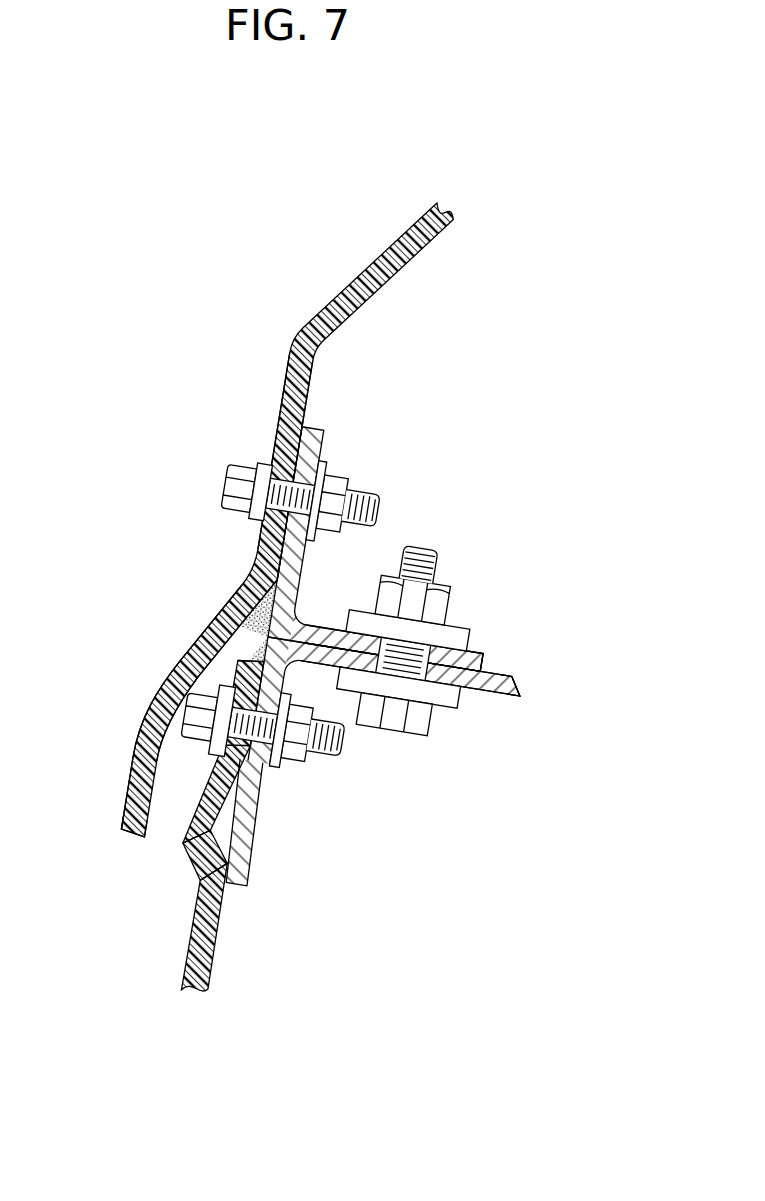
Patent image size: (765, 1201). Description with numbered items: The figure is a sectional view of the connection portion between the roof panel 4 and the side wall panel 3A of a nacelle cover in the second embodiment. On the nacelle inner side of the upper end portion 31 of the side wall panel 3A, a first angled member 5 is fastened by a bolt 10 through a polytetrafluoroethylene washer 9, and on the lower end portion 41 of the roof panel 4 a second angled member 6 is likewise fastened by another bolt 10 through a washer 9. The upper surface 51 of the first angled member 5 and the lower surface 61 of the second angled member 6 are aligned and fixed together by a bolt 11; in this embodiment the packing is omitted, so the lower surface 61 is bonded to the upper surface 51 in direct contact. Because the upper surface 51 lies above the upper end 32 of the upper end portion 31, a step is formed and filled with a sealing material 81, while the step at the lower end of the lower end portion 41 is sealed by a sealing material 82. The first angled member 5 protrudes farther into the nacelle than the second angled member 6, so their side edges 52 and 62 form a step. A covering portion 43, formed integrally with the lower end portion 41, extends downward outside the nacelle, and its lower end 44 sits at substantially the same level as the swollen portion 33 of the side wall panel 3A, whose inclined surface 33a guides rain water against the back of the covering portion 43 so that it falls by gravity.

The side wall panel 3A is at (185, 963).
The roof panel 4 is at (307, 332).
The first angled member 5 is at (243, 863).
The second angled member 6 is at (325, 440).
The polytetrafluoroethylene washer 9 is at (270, 462).
The bolt 10 is at (228, 473).
The bolt 11 is at (407, 708).
The upper end portion 31 is at (237, 683).
The upper end 32 is at (247, 645).
The swollen portion 33 is at (183, 822).
The inclined surface 33a is at (197, 857).
The lower end portion 41 is at (282, 407).
The covering portion 43 is at (132, 802).
The lower end 44 is at (133, 835).
The upper surface 51 is at (517, 672).
The side edge 52 is at (521, 689).
The lower surface 61 is at (466, 668).
The side edge 62 is at (483, 662).
The sealing material 81 is at (252, 652).
The sealing material 82 is at (258, 603).